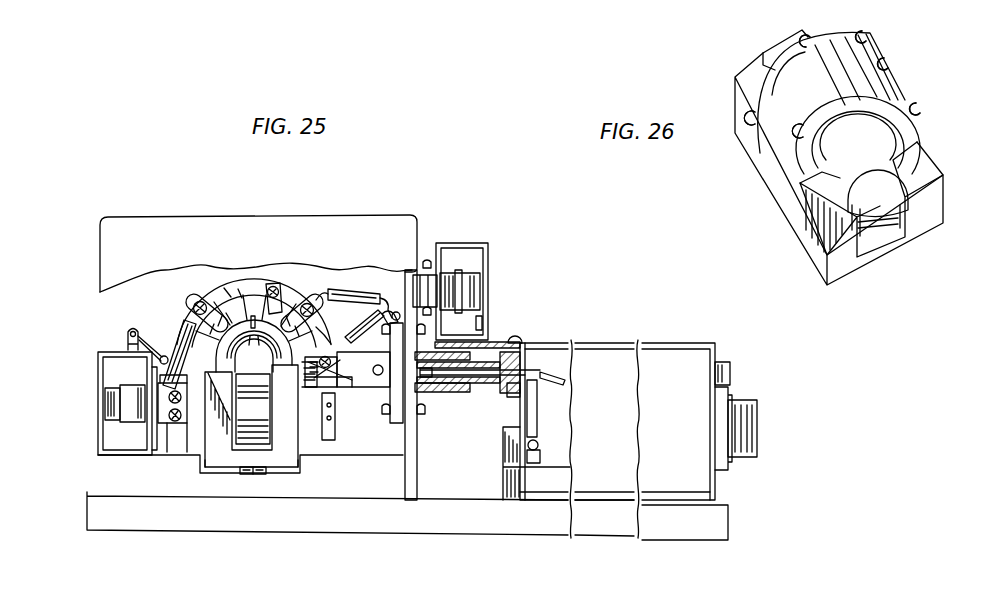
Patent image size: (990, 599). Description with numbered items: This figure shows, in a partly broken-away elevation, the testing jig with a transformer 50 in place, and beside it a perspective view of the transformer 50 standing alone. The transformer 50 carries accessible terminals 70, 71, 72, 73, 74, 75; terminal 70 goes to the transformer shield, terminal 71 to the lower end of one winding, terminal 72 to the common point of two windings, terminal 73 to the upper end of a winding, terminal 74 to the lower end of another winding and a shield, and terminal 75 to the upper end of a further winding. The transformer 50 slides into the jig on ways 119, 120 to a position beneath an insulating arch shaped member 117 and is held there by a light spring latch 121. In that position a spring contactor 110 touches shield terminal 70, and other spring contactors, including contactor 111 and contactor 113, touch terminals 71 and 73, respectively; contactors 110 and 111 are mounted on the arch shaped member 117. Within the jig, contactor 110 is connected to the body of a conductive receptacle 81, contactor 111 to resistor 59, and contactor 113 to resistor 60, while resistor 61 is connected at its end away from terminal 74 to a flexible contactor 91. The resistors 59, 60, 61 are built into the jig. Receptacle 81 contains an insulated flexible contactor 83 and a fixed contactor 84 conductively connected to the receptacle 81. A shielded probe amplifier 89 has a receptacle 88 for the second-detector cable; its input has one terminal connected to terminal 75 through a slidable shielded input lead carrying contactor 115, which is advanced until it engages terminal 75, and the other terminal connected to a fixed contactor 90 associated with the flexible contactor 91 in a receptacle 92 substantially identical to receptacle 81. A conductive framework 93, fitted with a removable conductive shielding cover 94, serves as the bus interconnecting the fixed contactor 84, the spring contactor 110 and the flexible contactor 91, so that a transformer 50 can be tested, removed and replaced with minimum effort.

In FIG. 25, the transformer 50 is at (213, 455).
In FIG. 26, the transformer 50 is at (722, 52).
In FIG. 25, the resistor 59 is at (350, 291).
In FIG. 25, the resistor 60 is at (180, 340).
In FIG. 25, the resistor 61 is at (366, 318).
In FIG. 25, the terminal 70 is at (193, 307).
In FIG. 26, the terminal 70 is at (751, 125).
In FIG. 25, the terminal 71 is at (290, 292).
In FIG. 26, the terminal 71 is at (868, 38).
In FIG. 25, the terminal 72 is at (254, 314).
In FIG. 26, the terminal 72 is at (812, 44).
In FIG. 25, the terminal 73 is at (227, 290).
In FIG. 26, the terminal 73 is at (798, 136).
In FIG. 26, the terminal 74 is at (891, 64).
In FIG. 25, the terminal 75 is at (320, 329).
In FIG. 26, the terminal 75 is at (923, 108).
In FIG. 25, the conductive receptacle 81 is at (97, 442).
In FIG. 25, the insulated flexible contactor 83 is at (122, 415).
In FIG. 25, the fixed contactor 84 is at (107, 398).
In FIG. 25, the receptacle 88 is at (733, 371).
In FIG. 25, the shielded probe amplifier 89 is at (613, 363).
In FIG. 25, the fixed contactor 90 is at (481, 289).
In FIG. 25, the flexible contactor 91 is at (467, 283).
In FIG. 25, the receptacle 92 is at (488, 261).
In FIG. 25, the conductive framework 93 is at (418, 487).
In FIG. 25, the removable conductive shielding cover 94 is at (108, 226).
In FIG. 25, the spring contactor 110 is at (187, 400).
In FIG. 25, the spring contactor 111 is at (293, 302).
In FIG. 25, the spring contactor 113 is at (227, 313).
In FIG. 25, the spring contactor 115 is at (333, 381).
In FIG. 25, the insulating arch shaped member 117 is at (240, 287).
In FIG. 25, the way 119 is at (215, 473).
In FIG. 25, the way 120 is at (290, 473).
In FIG. 25, the light spring latch 121 is at (252, 475).